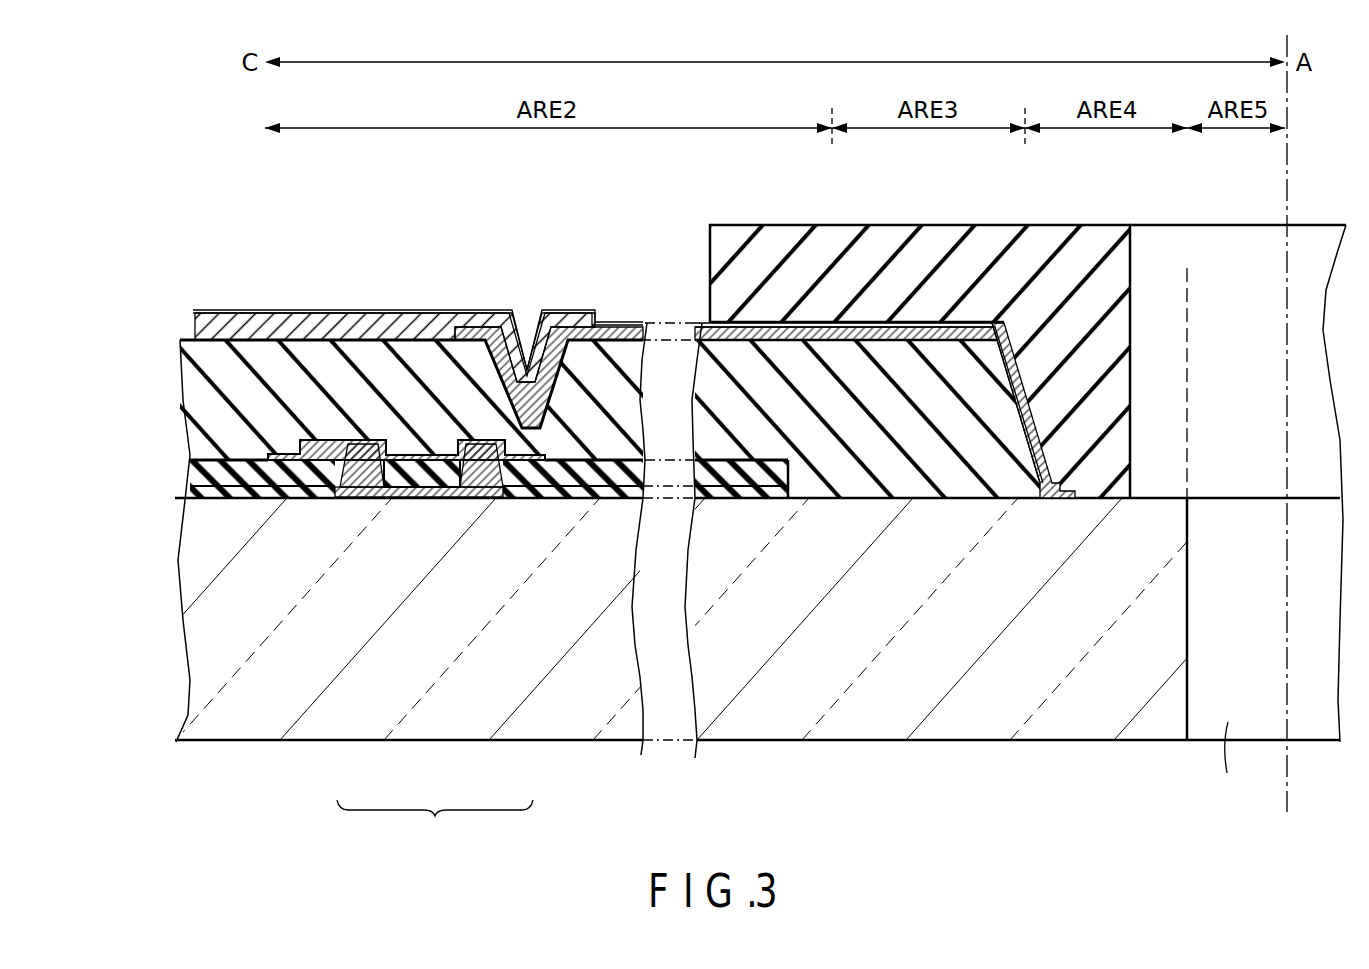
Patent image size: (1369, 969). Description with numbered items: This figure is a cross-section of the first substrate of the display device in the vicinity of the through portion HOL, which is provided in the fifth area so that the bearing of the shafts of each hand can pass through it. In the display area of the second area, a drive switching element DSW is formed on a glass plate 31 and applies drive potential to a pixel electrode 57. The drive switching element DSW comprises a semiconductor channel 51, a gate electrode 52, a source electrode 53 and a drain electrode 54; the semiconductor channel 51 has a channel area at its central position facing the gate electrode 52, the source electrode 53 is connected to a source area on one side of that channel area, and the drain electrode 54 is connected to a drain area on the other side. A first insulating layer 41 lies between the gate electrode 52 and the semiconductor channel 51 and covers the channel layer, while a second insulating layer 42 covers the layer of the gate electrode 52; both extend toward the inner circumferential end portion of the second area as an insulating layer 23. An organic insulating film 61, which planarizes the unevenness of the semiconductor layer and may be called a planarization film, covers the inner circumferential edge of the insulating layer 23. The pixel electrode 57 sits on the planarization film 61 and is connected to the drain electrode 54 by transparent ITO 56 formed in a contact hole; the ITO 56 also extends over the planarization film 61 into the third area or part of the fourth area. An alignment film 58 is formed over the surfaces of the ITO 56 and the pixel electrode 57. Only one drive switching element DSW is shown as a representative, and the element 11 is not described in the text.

The sealing member / counter substrate 11 is at (745, 242).
The insulating layer 23 is at (456, 653).
The glass plate 31 is at (195, 588).
The first insulating layer 41 is at (489, 631).
The second insulating layer 42 is at (789, 800).
The semiconductor channel 51 is at (419, 642).
The gate electrode 52 is at (431, 631).
The source electrode 53 is at (359, 623).
The drain electrode 54 is at (496, 623).
The ITO (connective metal) 56 is at (482, 334).
The pixel electrode 57 is at (386, 325).
The alignment film 58 is at (320, 311).
The organic insulating film (planarization film) 61 is at (197, 405).
The drive switching element DSW is at (435, 824).
The through portion HOL is at (1221, 535).